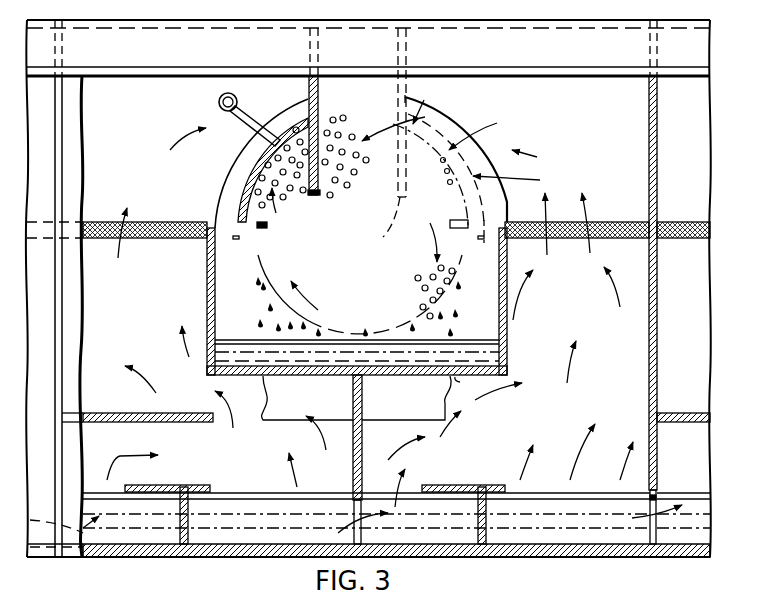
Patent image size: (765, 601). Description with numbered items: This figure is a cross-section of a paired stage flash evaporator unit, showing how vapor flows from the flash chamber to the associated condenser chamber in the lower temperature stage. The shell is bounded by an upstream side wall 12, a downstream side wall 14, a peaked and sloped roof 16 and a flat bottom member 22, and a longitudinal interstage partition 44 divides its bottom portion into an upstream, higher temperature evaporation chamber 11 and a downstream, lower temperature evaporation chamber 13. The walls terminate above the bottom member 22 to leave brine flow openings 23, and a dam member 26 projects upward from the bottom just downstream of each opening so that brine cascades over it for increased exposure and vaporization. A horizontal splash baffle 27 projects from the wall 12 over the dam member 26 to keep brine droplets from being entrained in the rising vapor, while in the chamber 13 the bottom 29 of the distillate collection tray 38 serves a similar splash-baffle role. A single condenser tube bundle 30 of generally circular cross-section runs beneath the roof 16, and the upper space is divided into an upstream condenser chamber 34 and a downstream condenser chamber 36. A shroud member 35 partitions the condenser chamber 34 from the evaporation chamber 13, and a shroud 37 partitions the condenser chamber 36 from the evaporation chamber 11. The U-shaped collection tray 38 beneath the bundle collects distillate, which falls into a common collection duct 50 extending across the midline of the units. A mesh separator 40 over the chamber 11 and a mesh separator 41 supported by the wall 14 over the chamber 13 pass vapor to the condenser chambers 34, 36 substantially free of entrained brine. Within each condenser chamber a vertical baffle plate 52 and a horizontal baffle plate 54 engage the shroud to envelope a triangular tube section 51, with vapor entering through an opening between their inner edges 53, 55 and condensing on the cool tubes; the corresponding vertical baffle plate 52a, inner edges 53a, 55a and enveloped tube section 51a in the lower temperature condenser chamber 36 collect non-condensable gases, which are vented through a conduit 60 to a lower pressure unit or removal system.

The upstream flash evaporation chamber 11 is at (232, 478).
The upstream side wall 12 is at (56, 308).
The downstream flash evaporation chamber 13 is at (553, 467).
The downstream side wall 14 is at (657, 349).
The roof 16 is at (517, 52).
The bottom member 22 is at (623, 550).
The brine flow openings 23 is at (340, 517).
The dam member 26 is at (182, 535).
The splash baffle 27 is at (97, 423).
The bottom of collection tray 29 is at (467, 387).
The condenser tube bundle 30 is at (343, 100).
The upstream condenser chamber 34 is at (258, 100).
The shroud member 35 is at (444, 123).
The downstream condenser chamber 36 is at (598, 95).
The shroud 37 is at (236, 193).
The distillate collection tray 38 is at (207, 278).
The mesh separator 40 is at (81, 316).
The mesh separator 41 is at (620, 221).
The interstage evaporation stage partition 44 is at (363, 433).
The collection duct 50 is at (270, 421).
The enveloped tube section 51 is at (457, 220).
The enveloped tube section 51a is at (252, 175).
The vertical baffle plate 52 is at (436, 190).
The vertical baffle plate 52a is at (300, 178).
The inner edge of vertical baffle plate 53 is at (386, 228).
The inner edge of vertical baffle plate 53a is at (313, 190).
The horizontal baffle plate 54 is at (234, 238).
The inner edge of horizontal baffle plate 55 is at (431, 271).
The inner edge of horizontal baffle plate 55a is at (266, 230).
The vent conduit 60 is at (218, 108).